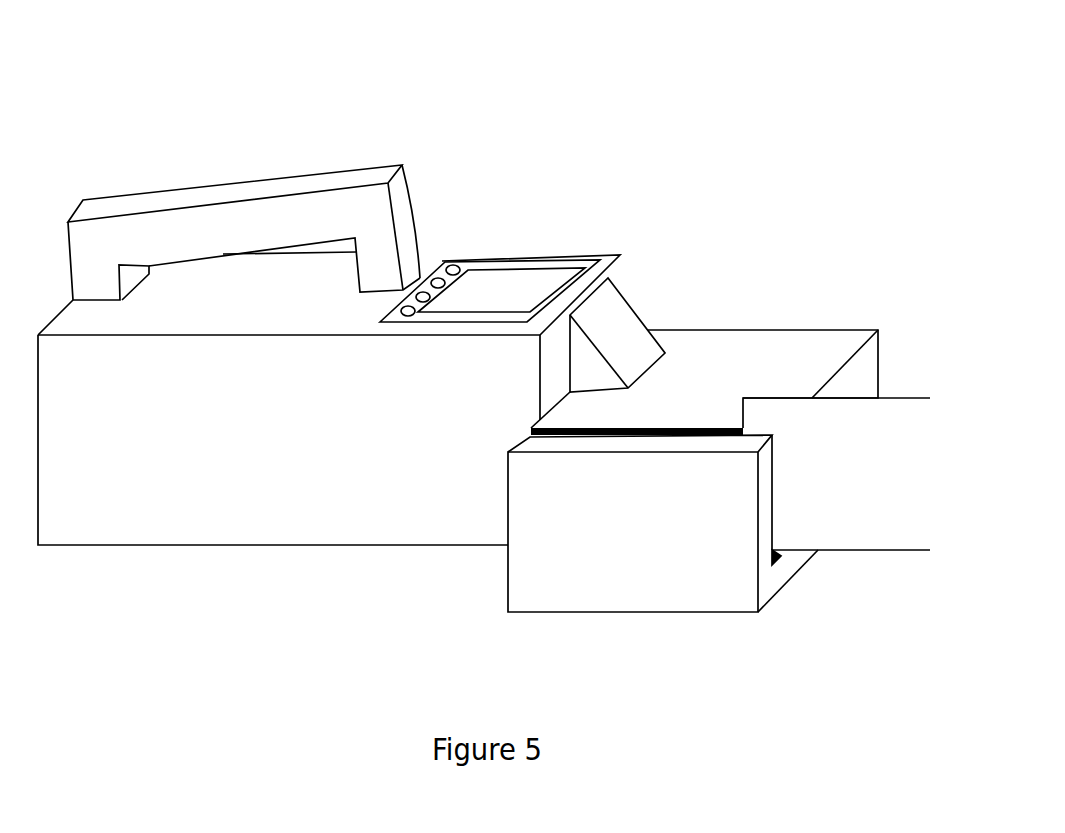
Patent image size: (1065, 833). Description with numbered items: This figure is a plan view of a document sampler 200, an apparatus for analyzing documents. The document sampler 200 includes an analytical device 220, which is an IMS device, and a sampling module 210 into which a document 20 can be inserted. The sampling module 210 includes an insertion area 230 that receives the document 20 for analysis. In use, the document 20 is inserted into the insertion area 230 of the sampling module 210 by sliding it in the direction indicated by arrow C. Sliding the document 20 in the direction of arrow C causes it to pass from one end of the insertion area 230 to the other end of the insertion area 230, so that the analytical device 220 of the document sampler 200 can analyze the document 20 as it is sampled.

The document sampler 200 is at (365, 326).
The analytical device 220 is at (382, 463).
The insertion area 230 is at (678, 407).
The sampling module 210 is at (645, 564).
The document 20 is at (803, 429).
The arrow C is at (812, 413).